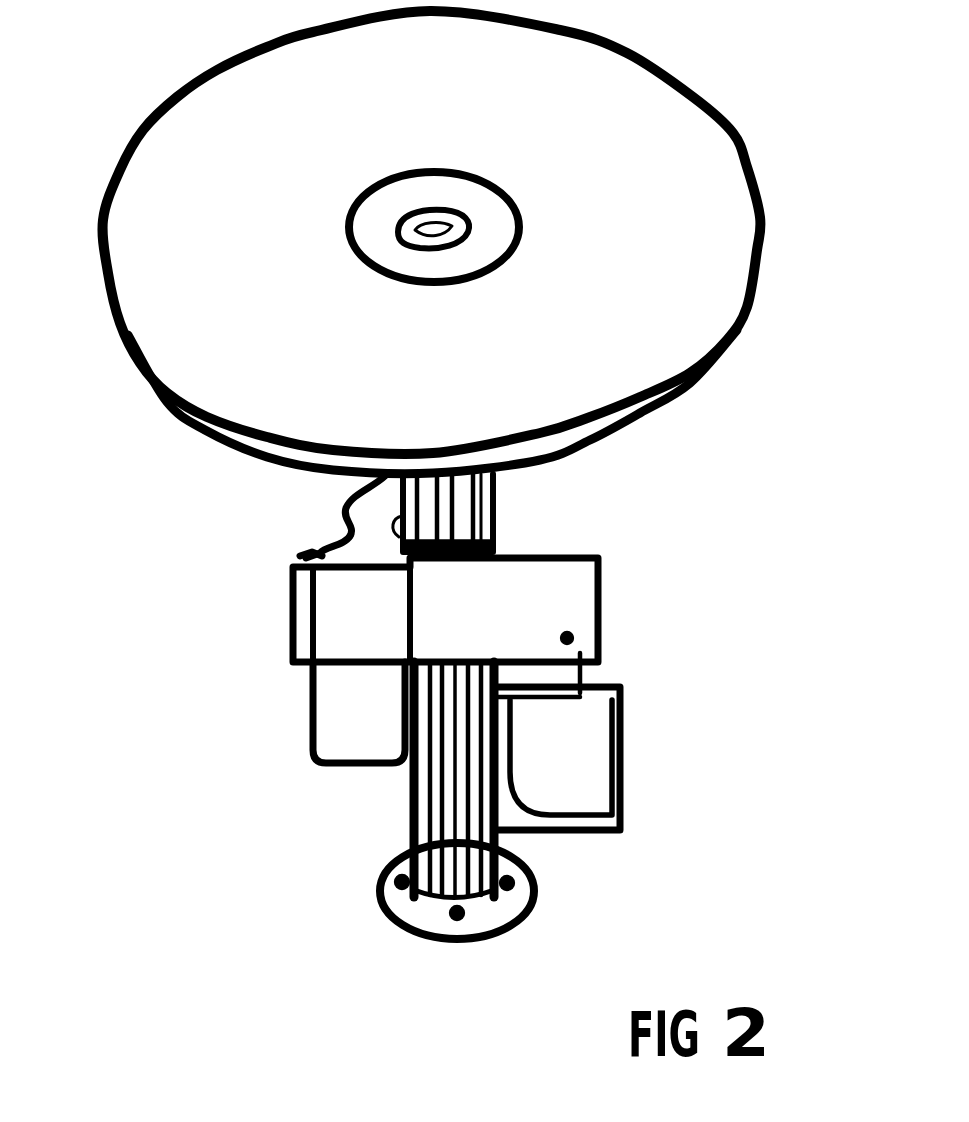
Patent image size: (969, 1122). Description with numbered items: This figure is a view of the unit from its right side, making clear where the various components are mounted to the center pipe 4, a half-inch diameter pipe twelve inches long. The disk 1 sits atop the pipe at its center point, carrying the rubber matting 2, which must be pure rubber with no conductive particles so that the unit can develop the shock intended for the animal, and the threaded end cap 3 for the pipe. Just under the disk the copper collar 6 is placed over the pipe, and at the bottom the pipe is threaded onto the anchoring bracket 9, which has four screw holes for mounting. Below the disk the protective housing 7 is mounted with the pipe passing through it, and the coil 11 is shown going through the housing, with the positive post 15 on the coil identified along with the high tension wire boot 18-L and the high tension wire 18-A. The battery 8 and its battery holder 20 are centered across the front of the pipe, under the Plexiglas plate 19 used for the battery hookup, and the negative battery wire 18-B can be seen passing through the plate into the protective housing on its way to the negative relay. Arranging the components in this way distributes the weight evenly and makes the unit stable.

The disk 1 is at (593, 188).
The rubber matting 2 is at (455, 262).
The threaded end cap 3 is at (385, 226).
The center pipe 4 is at (416, 795).
The copper collar 6 is at (493, 535).
The protective housing 7 is at (560, 621).
The battery 8 is at (570, 747).
The anchoring bracket 9 is at (527, 905).
The coil 11 is at (358, 710).
The positive post on coil 15 is at (307, 557).
The high tension wire 18-A is at (367, 483).
The negative battery to negative relay wire 18-B is at (583, 647).
The high tension wire boot on coil 18-L is at (337, 530).
The Plexiglas plate 19 is at (622, 691).
The battery holder 20 is at (622, 807).